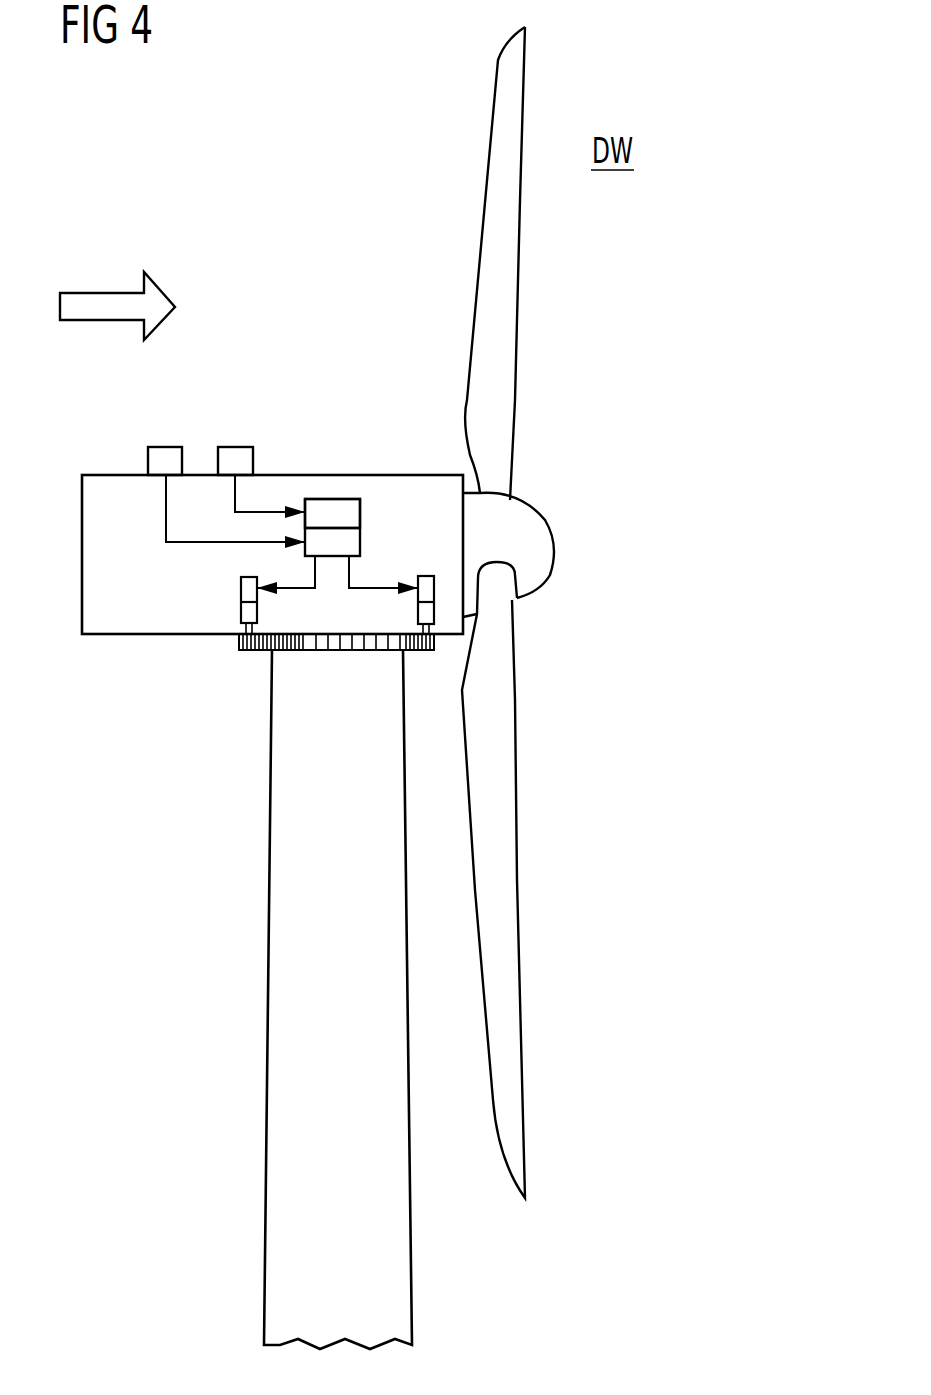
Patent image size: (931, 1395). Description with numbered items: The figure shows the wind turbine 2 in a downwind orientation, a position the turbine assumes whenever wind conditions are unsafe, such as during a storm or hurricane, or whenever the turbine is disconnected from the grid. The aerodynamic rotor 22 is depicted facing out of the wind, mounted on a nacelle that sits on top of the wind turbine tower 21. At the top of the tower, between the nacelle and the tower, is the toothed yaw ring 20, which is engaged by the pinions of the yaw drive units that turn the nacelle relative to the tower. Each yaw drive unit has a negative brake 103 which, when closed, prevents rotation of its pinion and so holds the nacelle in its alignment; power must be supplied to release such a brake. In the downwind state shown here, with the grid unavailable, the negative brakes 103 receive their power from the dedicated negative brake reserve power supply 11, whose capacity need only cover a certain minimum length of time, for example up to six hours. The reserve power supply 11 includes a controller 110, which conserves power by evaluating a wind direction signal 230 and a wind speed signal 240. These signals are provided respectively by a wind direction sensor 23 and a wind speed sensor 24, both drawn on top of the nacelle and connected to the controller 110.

The wind turbine 2 is at (273, 398).
The dedicated negative brake reserve power supply 11 is at (352, 538).
The yaw ring 20 is at (342, 651).
The wind turbine tower 21 is at (286, 921).
The aerodynamic rotor 22 is at (565, 300).
The wind direction sensor 23 is at (163, 452).
The wind speed sensor 24 is at (235, 452).
The negative brake 103 is at (252, 590).
The controller 110 is at (348, 505).
The wind direction signal 230 is at (185, 543).
The wind speed signal 240 is at (240, 493).